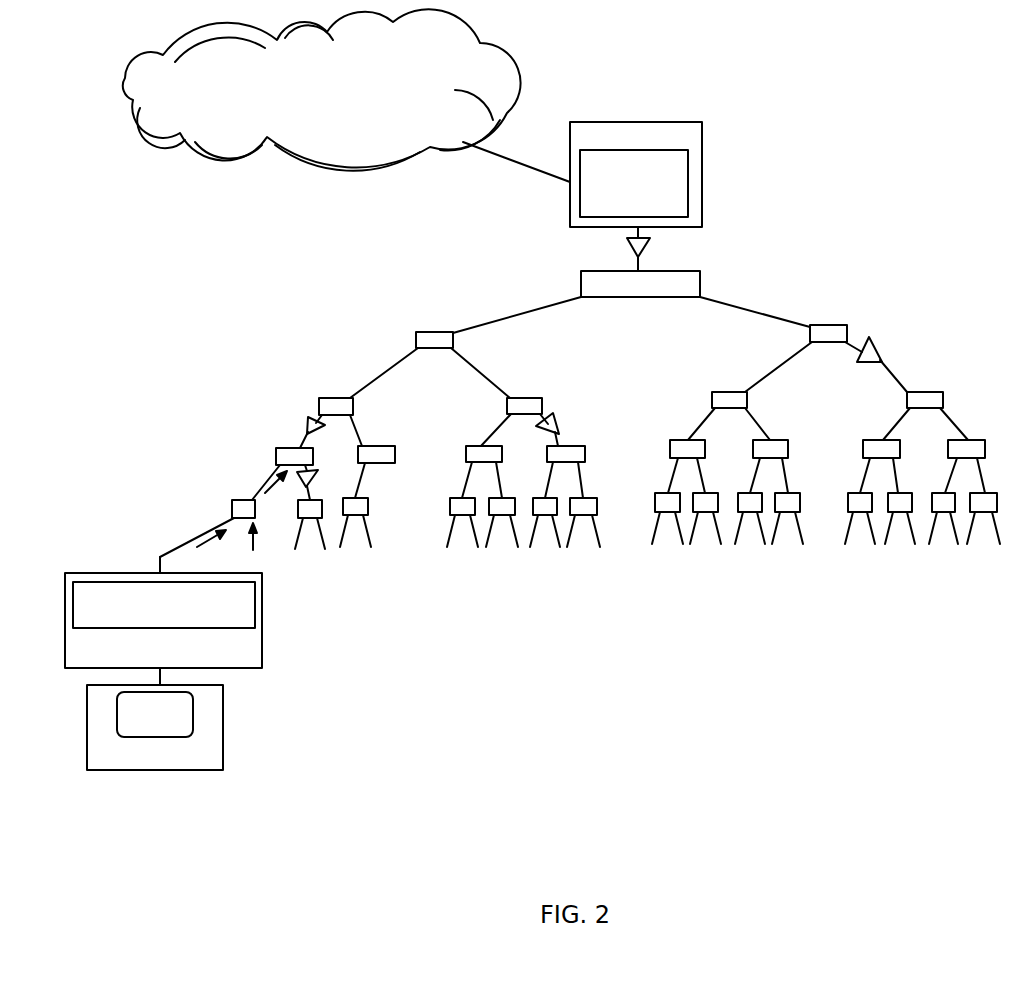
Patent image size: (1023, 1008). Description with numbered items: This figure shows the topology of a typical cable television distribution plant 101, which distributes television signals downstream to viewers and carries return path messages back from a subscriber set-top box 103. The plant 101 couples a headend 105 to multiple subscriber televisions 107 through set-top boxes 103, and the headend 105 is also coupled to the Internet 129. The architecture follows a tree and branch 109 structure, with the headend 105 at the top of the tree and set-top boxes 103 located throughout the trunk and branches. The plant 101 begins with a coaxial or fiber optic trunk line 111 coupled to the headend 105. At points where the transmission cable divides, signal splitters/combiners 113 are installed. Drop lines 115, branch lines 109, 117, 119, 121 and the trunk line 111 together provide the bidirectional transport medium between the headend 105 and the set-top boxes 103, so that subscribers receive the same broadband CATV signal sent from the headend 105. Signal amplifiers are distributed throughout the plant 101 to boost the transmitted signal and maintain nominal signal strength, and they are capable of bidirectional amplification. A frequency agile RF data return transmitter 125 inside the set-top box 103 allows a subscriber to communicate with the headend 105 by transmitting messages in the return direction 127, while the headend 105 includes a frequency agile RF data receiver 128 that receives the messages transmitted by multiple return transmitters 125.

The cable television distribution plant 101 is at (280, 338).
The set-top box 103 is at (262, 658).
The headend 105 is at (703, 142).
The subscriber television 107 is at (223, 718).
The branch line 109 is at (514, 315).
The trunk line 111 is at (636, 232).
The signal splitter/combiner 113 is at (620, 300).
The drop line 115 is at (169, 553).
The branch line 117 is at (361, 378).
The branch line 119 is at (302, 446).
The branch line 121 is at (260, 481).
The RF data return transmitter 125 is at (257, 613).
The return direction 127 is at (277, 470).
The RF data receiver 128 is at (688, 195).
The Internet 129 is at (368, 115).